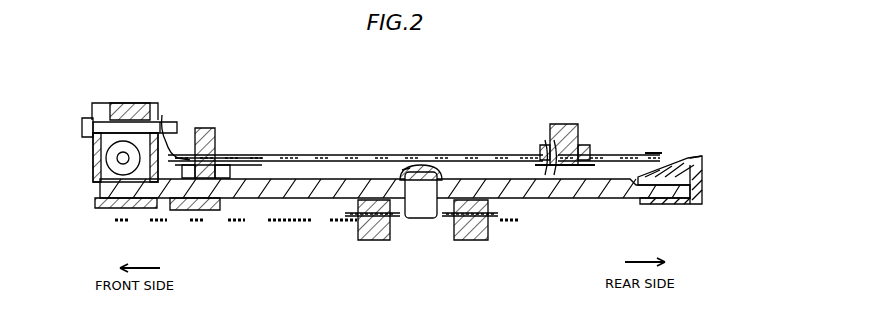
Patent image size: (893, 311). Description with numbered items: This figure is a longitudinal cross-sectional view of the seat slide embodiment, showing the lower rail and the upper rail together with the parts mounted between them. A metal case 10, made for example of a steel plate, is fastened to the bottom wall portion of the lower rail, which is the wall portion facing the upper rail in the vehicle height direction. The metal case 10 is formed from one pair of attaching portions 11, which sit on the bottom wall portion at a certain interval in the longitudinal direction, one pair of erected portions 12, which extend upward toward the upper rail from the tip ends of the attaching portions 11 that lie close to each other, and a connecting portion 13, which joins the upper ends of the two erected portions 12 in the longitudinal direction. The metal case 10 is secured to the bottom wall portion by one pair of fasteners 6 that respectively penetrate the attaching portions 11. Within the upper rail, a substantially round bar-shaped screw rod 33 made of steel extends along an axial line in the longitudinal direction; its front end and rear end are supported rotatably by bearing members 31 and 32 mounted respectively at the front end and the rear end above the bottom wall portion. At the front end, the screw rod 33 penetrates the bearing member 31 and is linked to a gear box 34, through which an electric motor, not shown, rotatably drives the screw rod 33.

The screw rod 33 is at (590, 201).
The bearing member 32 is at (668, 206).
The gear box 34 is at (162, 115).
The bearing member 31 is at (185, 212).
The erected portions 12 is at (358, 213).
The fasteners 6 is at (372, 241).
The attaching portions 11 is at (398, 230).
The connecting portion 13 is at (424, 164).
The metal case 10 is at (398, 155).